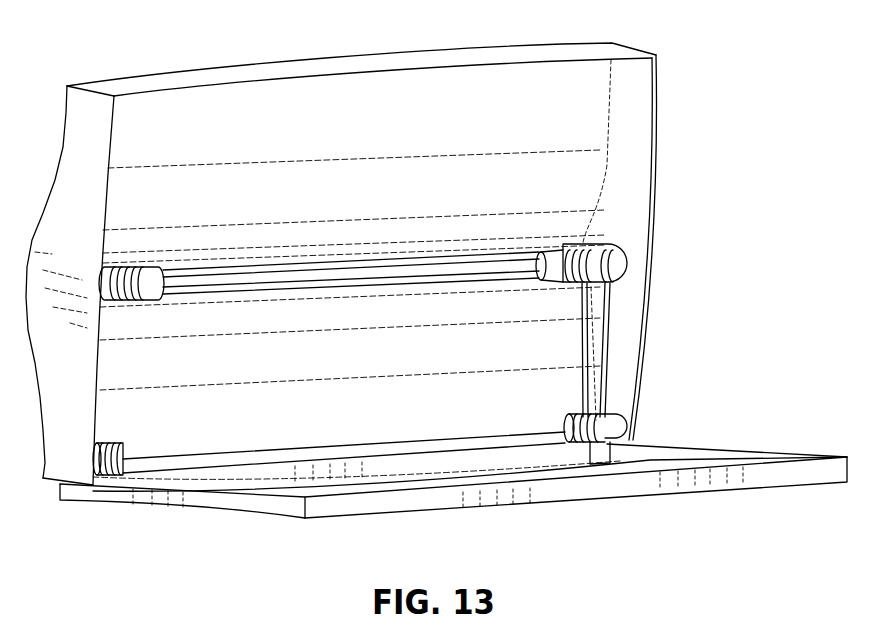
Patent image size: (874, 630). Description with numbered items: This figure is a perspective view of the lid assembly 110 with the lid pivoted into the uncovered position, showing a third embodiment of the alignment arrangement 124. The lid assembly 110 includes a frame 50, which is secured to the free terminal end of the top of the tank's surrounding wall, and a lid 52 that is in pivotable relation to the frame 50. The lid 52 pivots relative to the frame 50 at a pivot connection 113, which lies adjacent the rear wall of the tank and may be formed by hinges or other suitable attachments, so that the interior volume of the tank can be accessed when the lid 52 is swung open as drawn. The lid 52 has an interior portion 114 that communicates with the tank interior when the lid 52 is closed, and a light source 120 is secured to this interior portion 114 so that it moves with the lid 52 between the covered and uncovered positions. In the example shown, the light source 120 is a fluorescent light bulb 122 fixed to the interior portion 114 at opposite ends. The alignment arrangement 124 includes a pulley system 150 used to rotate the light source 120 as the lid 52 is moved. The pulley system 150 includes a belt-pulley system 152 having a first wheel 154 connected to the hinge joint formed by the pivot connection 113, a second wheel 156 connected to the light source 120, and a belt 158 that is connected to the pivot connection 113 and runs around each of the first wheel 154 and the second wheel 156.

The lid assembly 110 is at (752, 139).
The lid 52 is at (128, 88).
The interior portion 114 is at (584, 93).
The alignment arrangement 124 is at (660, 361).
The pivot connection 113 is at (51, 492).
The frame 50 is at (769, 452).
The light source 120 is at (283, 293).
The fluorescent light bulb 122 is at (358, 283).
The first wheel 154 is at (617, 257).
The pulley system 150 is at (572, 308).
The belt-pulley system 152 is at (592, 400).
The belt 158 is at (612, 320).
The second wheel 156 is at (609, 418).